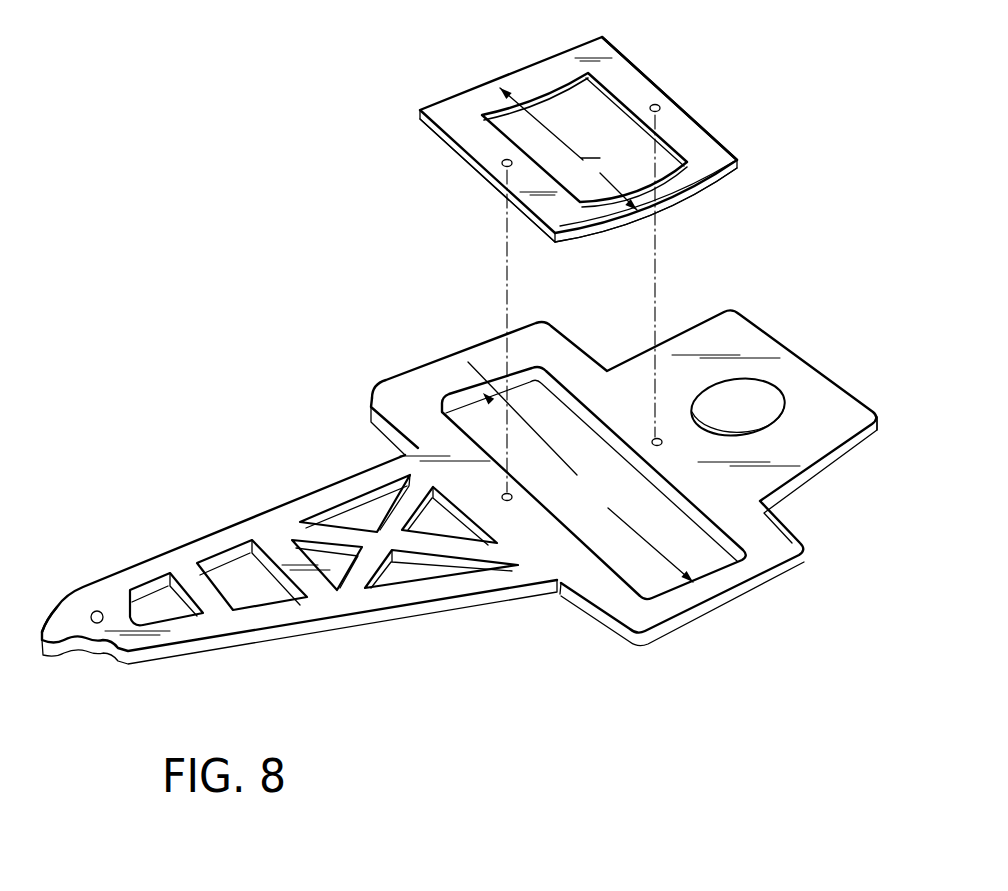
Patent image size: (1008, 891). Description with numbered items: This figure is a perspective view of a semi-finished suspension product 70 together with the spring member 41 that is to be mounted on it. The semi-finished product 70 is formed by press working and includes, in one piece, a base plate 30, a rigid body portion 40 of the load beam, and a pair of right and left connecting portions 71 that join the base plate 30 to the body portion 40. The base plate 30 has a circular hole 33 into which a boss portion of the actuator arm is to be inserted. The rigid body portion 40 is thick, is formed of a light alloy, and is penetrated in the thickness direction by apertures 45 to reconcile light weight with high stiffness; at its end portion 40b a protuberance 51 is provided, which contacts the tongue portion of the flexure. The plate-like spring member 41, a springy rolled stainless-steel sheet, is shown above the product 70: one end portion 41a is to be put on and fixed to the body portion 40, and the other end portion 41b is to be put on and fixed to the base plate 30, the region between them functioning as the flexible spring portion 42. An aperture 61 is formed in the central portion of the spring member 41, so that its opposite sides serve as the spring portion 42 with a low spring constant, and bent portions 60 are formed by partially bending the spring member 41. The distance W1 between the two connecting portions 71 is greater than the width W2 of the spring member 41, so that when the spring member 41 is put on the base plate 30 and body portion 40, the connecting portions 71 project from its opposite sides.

The base plate 30 is at (832, 445).
The circular hole 33 is at (767, 420).
The rigid body portion 40 is at (323, 632).
The end portion of the body portion 40b is at (102, 635).
The spring member 41 is at (488, 90).
The one end portion of the spring member 41a is at (475, 145).
The other end portion of the spring member 41b is at (647, 83).
The spring portion 42 is at (627, 214).
The apertures 45 is at (323, 557).
The protuberance 51 is at (100, 611).
The bent portions 60 is at (528, 95).
The aperture 61 is at (597, 122).
The semi-finished suspension product 70 is at (368, 378).
The connecting portions 71 is at (427, 380).
The distance between the two connecting portions W1 is at (580, 472).
The width of the spring member W2 is at (568, 149).